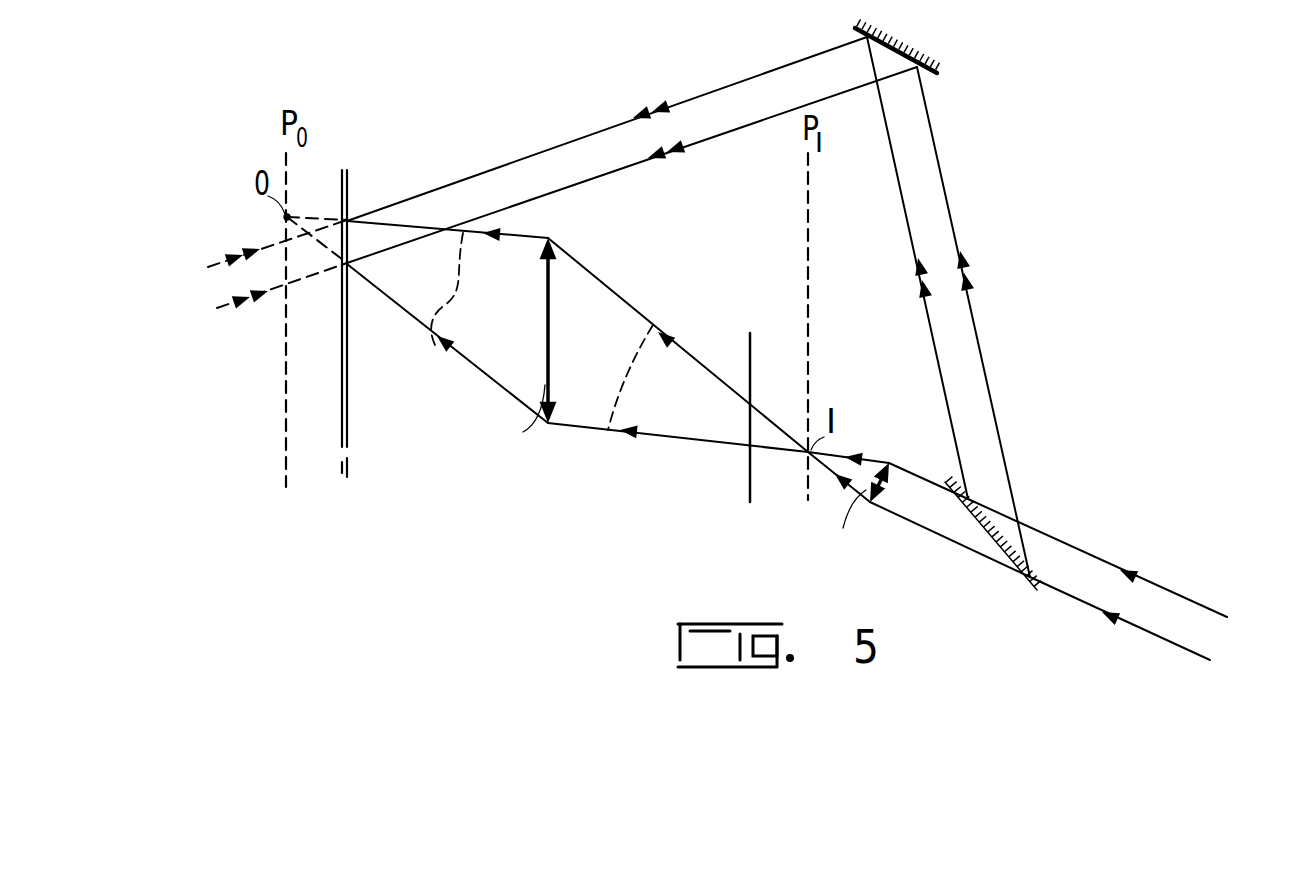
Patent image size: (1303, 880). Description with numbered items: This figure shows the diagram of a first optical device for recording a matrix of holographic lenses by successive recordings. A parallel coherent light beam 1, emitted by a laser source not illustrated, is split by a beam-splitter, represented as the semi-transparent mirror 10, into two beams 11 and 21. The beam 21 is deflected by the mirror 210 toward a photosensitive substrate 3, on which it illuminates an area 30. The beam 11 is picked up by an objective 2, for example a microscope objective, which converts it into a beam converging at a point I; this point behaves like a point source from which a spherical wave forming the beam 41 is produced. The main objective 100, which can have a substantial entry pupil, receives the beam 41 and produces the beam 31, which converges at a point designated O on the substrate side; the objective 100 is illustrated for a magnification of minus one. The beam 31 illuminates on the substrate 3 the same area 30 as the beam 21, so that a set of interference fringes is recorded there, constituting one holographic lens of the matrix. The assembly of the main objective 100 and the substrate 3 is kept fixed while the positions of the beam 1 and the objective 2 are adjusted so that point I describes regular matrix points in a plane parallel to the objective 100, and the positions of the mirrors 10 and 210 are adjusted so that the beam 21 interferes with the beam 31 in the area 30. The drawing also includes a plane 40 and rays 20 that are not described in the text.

The parallel coherent light beam 1 is at (1140, 585).
The objective 2 is at (877, 493).
The photosensitive substrate 3 is at (349, 198).
The semi-transparent mirror 10 is at (1000, 550).
The beam 11 is at (928, 520).
The virtual rays from object 20 is at (255, 283).
The beam 21 is at (600, 140).
The area 30 is at (352, 245).
The beam 31 is at (473, 353).
The image plane diaphragm 40 is at (747, 435).
The beam 41 is at (680, 430).
The main objective 100 is at (552, 282).
The mirror 210 is at (935, 49).